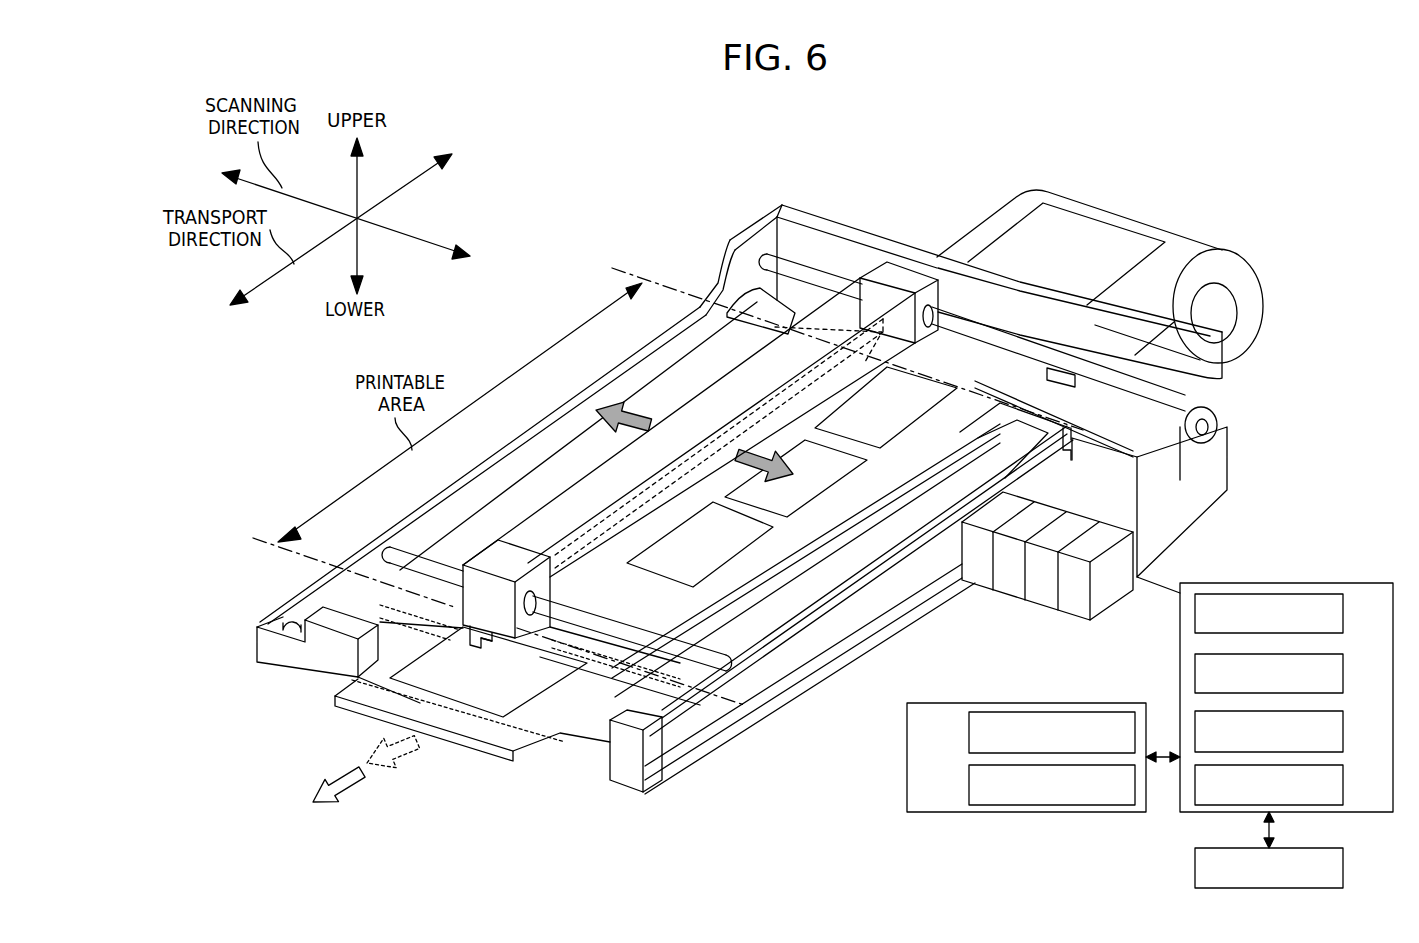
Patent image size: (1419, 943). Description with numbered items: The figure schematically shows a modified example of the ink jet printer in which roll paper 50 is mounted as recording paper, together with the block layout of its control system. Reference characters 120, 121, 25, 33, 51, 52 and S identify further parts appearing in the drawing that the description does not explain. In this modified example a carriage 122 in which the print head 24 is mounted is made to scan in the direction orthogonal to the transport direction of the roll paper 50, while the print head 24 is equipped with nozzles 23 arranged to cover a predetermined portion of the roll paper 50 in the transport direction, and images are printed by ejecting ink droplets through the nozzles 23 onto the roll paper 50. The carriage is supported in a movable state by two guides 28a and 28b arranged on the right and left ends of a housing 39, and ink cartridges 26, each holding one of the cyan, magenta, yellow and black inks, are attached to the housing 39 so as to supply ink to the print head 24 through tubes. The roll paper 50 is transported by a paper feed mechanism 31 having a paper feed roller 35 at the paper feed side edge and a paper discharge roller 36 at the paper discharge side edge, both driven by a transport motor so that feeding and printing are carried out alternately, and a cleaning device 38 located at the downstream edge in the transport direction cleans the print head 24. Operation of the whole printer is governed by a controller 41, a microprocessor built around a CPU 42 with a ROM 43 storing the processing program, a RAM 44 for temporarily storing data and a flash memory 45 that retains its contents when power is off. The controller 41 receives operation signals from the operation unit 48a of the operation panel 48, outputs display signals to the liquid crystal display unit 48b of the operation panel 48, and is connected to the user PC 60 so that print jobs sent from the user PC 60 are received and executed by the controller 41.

The printer 120 is at (1162, 161).
The frame 121 is at (884, 227).
The housing 39 is at (714, 300).
The guide 28a is at (830, 280).
The guide 28b is at (720, 663).
The roll paper 50 is at (1180, 235).
The bearing 33 is at (1228, 415).
The paper feed mechanism 31 is at (1292, 418).
The paper feed roller 35 is at (1135, 420).
The cleaning device 38 is at (1052, 457).
The ink cartridges 26 is at (1010, 600).
The carriage 25 is at (693, 480).
The carriage 122 is at (770, 432).
The nozzles 23 is at (473, 648).
The print head 24 is at (484, 648).
The paper holder 51 is at (352, 673).
The paper slot 52 is at (448, 700).
The paper sheet S is at (350, 713).
The paper discharge roller 36 is at (590, 732).
The controller 41 is at (1328, 584).
The CPU 42 is at (1343, 615).
The ROM 43 is at (1343, 675).
The RAM 44 is at (1343, 733).
The flash memory 45 is at (1343, 786).
The user PC 60 is at (1343, 869).
The operation panel 48 is at (1084, 703).
The operation unit 48a is at (969, 732).
The display unit 48b is at (969, 785).